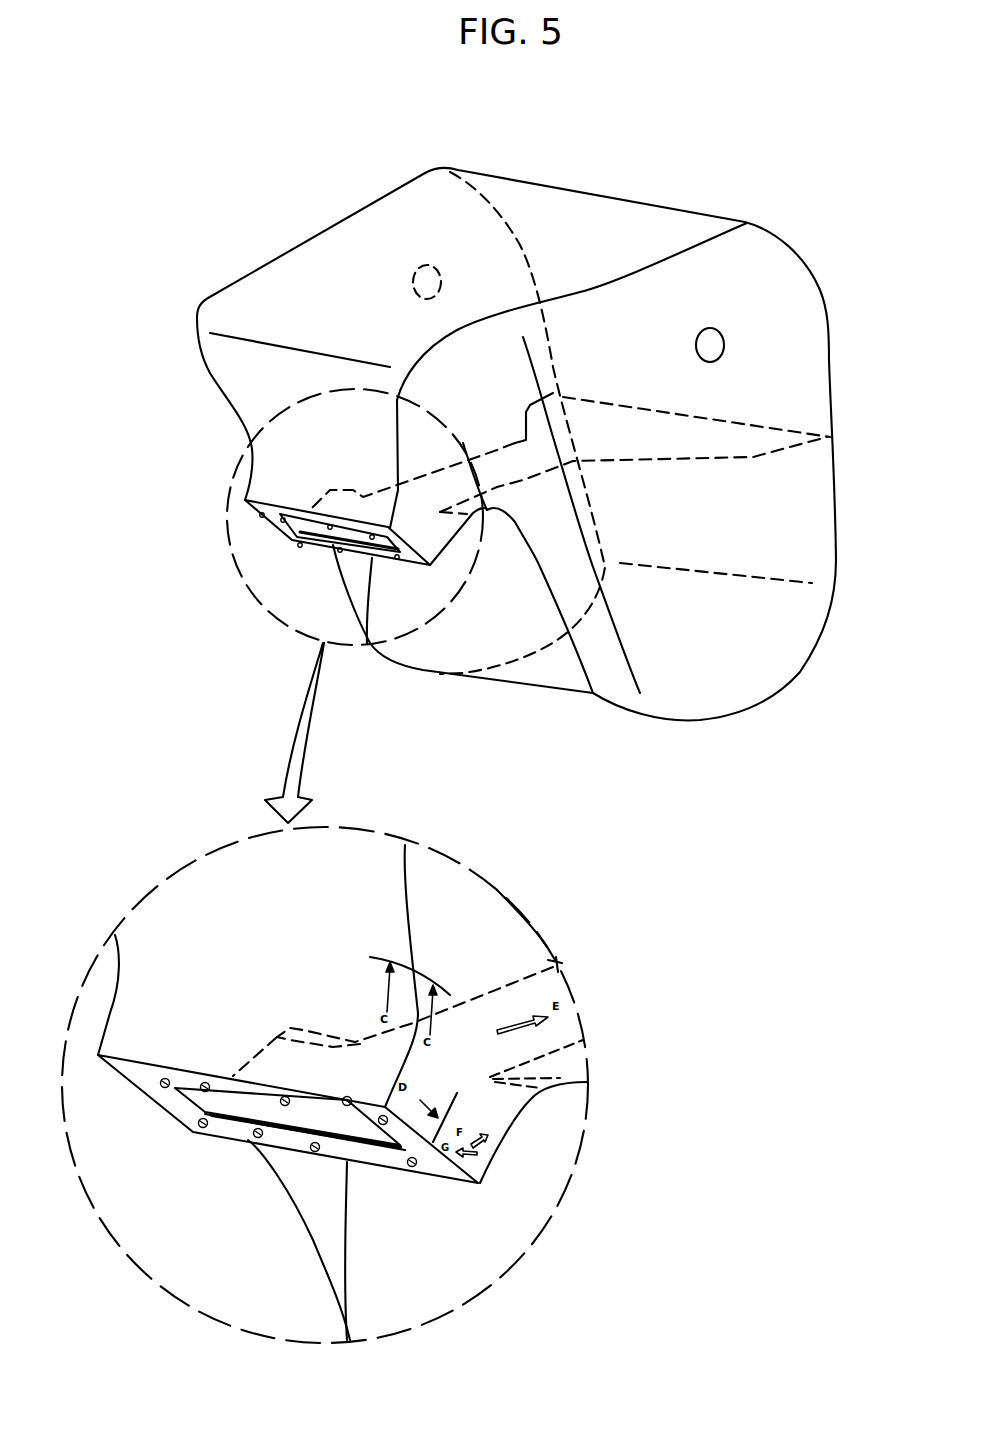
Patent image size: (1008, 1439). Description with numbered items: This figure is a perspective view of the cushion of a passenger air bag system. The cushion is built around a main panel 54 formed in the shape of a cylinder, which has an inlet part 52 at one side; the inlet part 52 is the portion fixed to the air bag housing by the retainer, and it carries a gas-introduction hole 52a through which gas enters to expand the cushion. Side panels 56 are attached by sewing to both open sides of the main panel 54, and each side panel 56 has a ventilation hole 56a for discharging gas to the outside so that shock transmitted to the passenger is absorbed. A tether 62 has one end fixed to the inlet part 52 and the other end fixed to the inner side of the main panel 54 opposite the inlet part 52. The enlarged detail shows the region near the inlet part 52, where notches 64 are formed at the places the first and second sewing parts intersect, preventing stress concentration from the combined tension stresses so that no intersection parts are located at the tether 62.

The inlet part 52 is at (140, 1071).
The gas-introduction hole 52a is at (245, 1112).
The main panel 54 is at (573, 205).
The side panels 56 is at (795, 500).
The ventilation hole 56a is at (713, 341).
The tether 62 is at (750, 443).
The notches 64 is at (490, 1076).